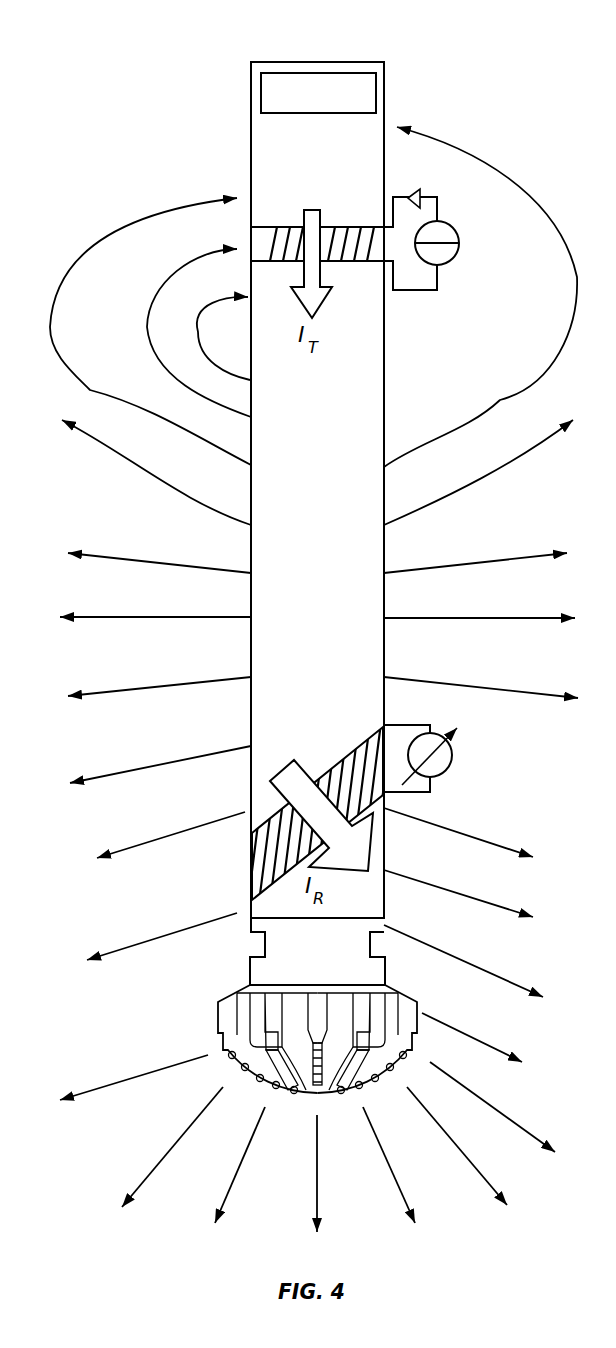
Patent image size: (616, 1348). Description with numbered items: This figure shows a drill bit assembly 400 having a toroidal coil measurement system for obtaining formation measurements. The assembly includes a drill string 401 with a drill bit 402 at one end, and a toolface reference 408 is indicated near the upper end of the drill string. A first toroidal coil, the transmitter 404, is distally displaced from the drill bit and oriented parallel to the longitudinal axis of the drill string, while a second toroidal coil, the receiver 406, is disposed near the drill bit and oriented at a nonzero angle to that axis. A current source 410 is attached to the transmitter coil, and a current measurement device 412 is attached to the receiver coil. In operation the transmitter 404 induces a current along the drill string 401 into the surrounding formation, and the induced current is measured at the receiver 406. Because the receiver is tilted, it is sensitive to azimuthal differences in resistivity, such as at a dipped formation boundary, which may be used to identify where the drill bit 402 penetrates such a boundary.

The drill bit assembly 400 is at (100, 48).
The drill string 401 is at (385, 77).
The drill bit 402 is at (222, 1045).
The first toroidal coil (transmitter) 404 is at (262, 243).
The second toroidal coil (receiver) 406 is at (247, 878).
The toolface reference 408 is at (261, 82).
The current source 410 is at (440, 213).
The current measurement device 412 is at (445, 778).